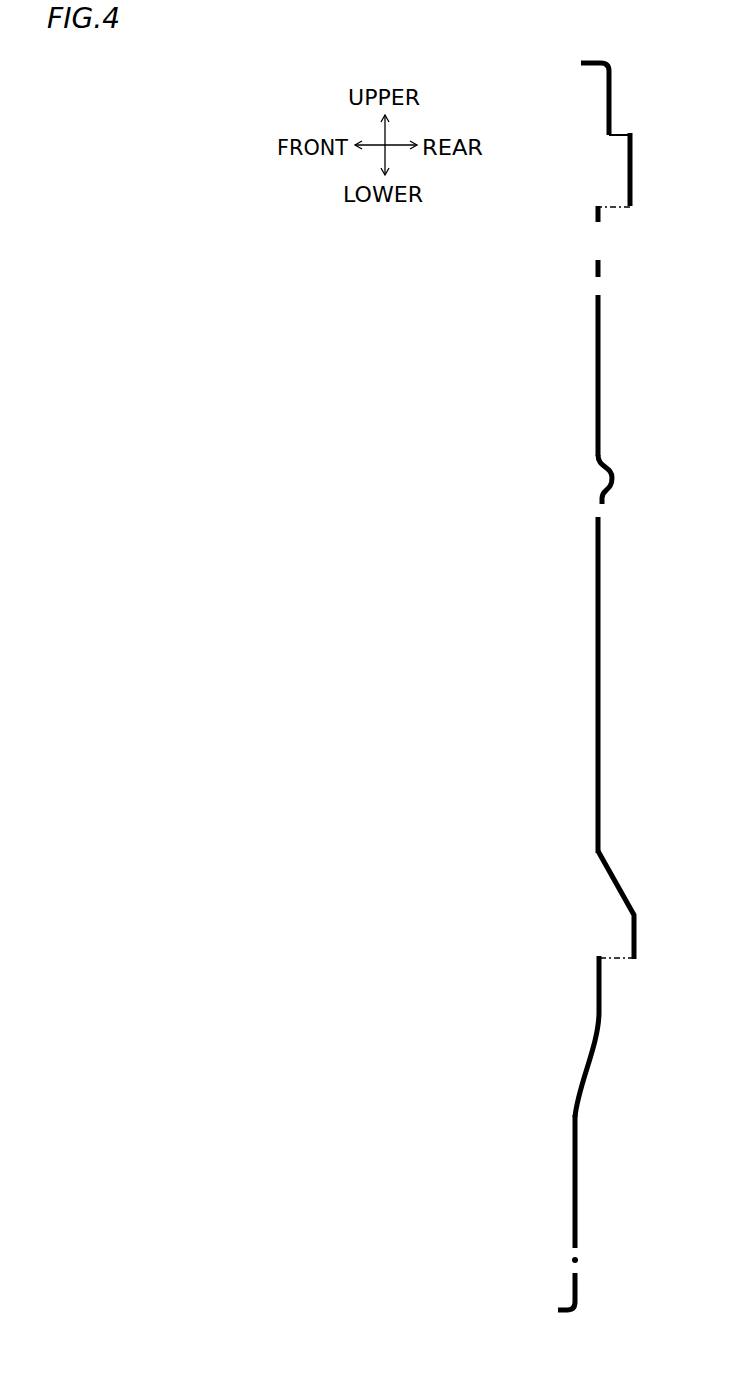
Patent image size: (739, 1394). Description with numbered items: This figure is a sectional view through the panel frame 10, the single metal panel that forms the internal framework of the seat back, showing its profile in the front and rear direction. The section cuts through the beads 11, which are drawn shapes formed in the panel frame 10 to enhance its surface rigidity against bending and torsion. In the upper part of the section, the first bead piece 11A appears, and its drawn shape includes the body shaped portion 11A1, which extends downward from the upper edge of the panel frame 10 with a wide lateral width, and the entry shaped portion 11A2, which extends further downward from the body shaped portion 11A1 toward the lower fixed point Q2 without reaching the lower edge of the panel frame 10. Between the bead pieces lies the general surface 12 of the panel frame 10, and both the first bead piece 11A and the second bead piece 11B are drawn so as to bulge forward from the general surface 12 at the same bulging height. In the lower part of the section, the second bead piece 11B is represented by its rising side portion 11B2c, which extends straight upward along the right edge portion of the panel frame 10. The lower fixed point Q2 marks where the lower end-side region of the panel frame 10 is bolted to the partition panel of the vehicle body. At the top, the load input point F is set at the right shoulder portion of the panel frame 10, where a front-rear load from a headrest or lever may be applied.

The load input point F is at (628, 166).
The panel frame 10 is at (440, 383).
The beads 11 is at (535, 785).
The first bead piece 11A is at (596, 345).
The body shaped portion 11A1 is at (597, 421).
The entry shaped portion 11A2 is at (597, 761).
The general surface 12 is at (632, 937).
The second bead piece 11B is at (573, 1170).
The rising side portion 11B2c is at (573, 1216).
The lower fixed point Q2 is at (573, 1261).